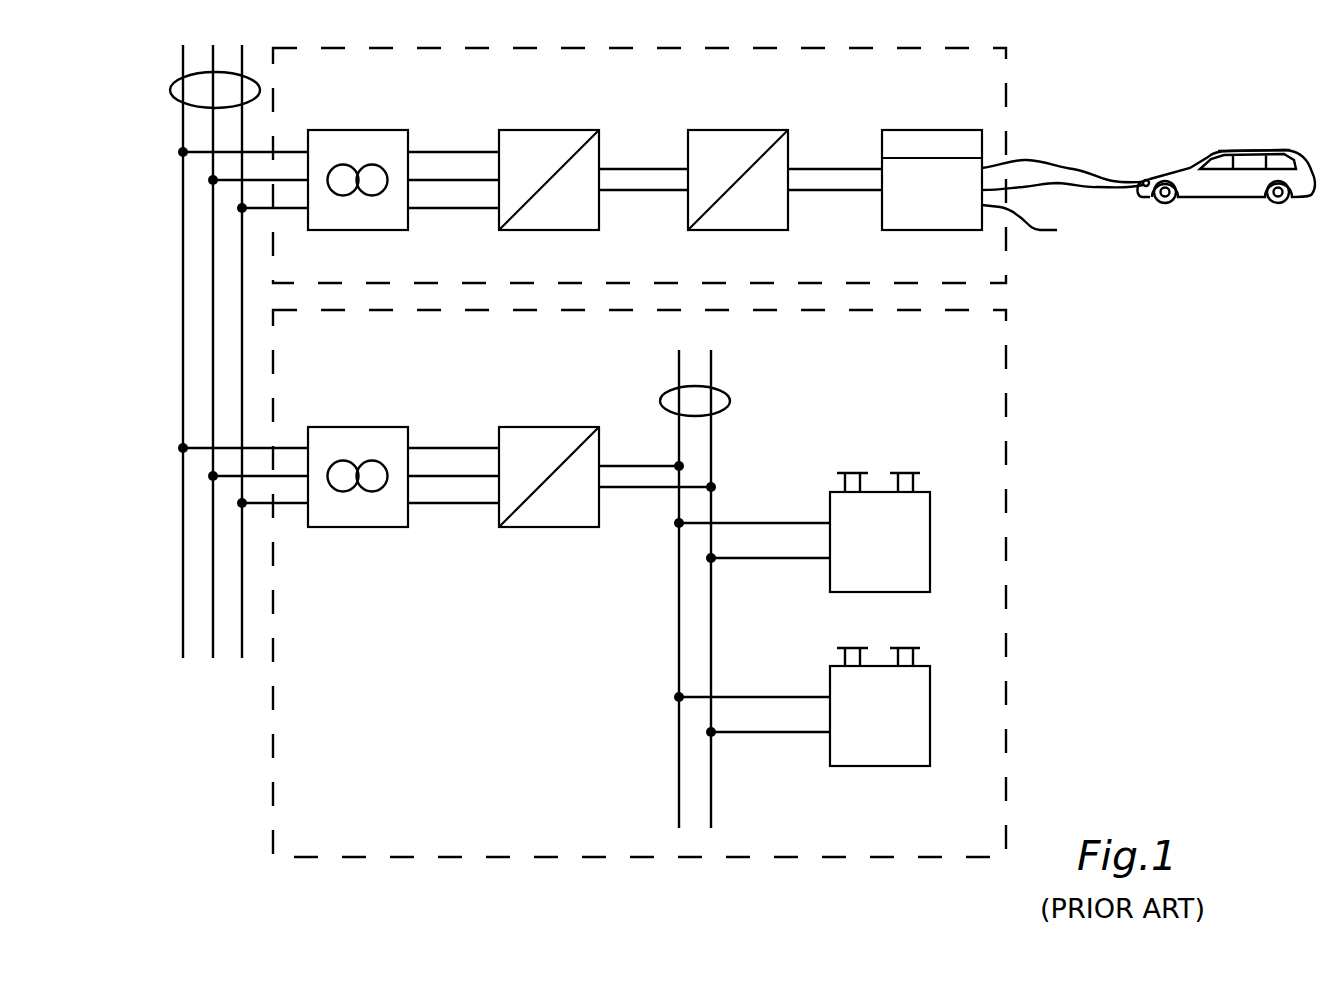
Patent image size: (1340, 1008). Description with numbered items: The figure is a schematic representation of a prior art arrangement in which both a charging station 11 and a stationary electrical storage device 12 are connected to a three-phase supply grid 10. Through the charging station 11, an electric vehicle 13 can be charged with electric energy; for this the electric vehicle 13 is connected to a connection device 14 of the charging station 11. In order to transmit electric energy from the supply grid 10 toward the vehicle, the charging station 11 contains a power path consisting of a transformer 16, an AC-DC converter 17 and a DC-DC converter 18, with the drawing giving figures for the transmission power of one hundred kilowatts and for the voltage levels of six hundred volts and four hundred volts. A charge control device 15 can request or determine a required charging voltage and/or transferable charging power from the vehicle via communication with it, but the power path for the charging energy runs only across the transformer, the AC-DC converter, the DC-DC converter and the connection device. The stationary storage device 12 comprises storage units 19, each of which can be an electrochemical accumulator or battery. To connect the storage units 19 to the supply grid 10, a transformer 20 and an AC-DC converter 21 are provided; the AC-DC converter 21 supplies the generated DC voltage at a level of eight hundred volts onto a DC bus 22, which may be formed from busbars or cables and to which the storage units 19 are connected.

The supply grid 10 is at (243, 72).
The charging station 11 is at (1006, 102).
The stationary electrical storage device 12 is at (1006, 400).
The electric vehicle 13 is at (1228, 149).
The connection device 14 is at (1052, 185).
The charge control device 15 is at (932, 129).
The transformer 16 is at (367, 129).
The AC-DC converter 17 is at (555, 129).
The DC-DC converter 18 is at (738, 129).
The storage unit 19 is at (931, 552).
The transformer 20 is at (367, 426).
The AC-DC converter 21 is at (555, 426).
The DC bus 22 is at (730, 402).